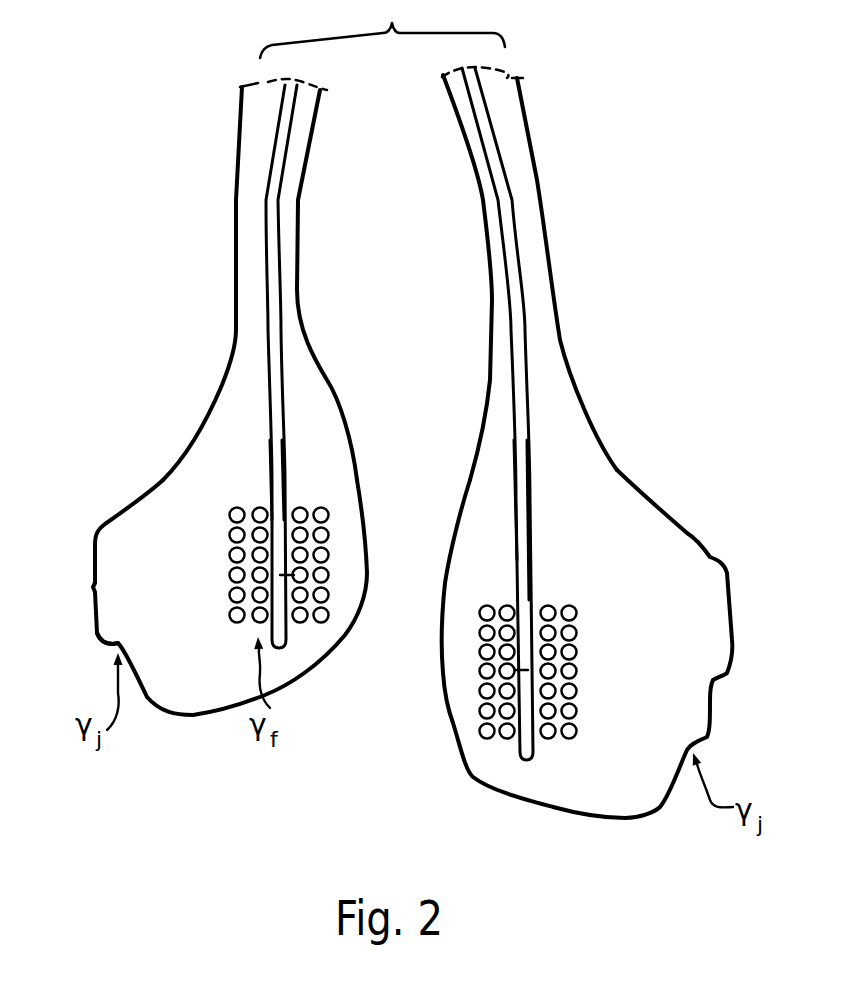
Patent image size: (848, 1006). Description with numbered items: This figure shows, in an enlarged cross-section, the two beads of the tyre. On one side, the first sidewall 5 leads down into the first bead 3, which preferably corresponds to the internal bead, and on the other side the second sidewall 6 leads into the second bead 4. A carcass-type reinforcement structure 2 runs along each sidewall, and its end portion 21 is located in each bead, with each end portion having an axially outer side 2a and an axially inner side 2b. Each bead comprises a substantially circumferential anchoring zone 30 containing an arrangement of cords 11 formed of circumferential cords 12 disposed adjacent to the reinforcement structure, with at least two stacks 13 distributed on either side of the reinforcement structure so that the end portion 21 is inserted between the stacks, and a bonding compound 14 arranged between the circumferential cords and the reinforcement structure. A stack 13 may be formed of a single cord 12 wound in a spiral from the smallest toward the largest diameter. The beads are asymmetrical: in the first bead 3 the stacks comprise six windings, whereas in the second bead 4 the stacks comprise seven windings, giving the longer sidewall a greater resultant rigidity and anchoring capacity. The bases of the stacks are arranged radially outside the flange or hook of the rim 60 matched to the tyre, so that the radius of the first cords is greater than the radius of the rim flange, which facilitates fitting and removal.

The reinforcement structure 2 is at (267, 300).
The axially outer side of the end portion 2a is at (267, 507).
The axially inner side of the end portion 2b is at (291, 505).
The first bead 3 is at (205, 537).
The second bead 4 is at (620, 596).
The first sidewall 5 is at (243, 200).
The second sidewall 6 is at (525, 232).
The arrangement of cords 11 is at (334, 503).
The circumferential cord 12 is at (237, 619).
The stack 13 is at (316, 632).
The bonding compound 14 is at (245, 507).
The end portion of the reinforcement structure 21 is at (515, 670).
The anchoring zone 30 is at (210, 581).
The rim 60 is at (100, 650).